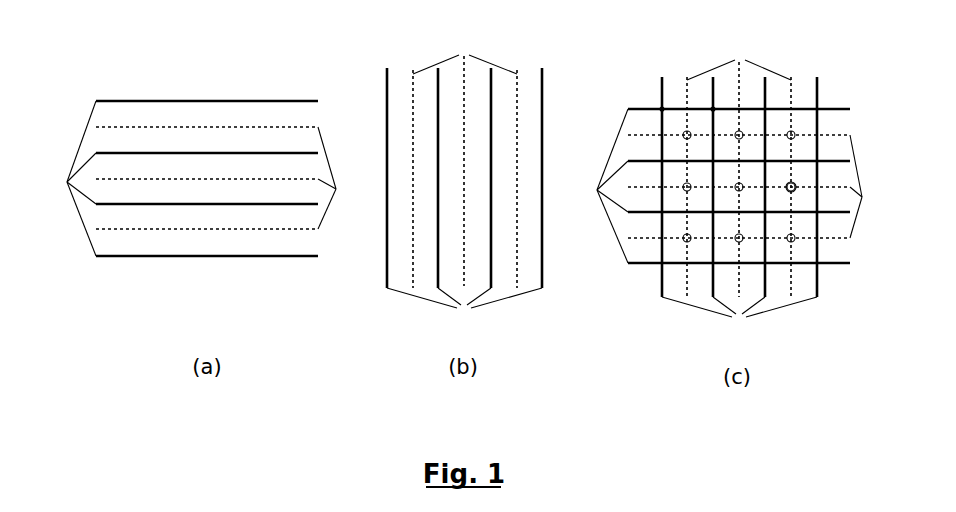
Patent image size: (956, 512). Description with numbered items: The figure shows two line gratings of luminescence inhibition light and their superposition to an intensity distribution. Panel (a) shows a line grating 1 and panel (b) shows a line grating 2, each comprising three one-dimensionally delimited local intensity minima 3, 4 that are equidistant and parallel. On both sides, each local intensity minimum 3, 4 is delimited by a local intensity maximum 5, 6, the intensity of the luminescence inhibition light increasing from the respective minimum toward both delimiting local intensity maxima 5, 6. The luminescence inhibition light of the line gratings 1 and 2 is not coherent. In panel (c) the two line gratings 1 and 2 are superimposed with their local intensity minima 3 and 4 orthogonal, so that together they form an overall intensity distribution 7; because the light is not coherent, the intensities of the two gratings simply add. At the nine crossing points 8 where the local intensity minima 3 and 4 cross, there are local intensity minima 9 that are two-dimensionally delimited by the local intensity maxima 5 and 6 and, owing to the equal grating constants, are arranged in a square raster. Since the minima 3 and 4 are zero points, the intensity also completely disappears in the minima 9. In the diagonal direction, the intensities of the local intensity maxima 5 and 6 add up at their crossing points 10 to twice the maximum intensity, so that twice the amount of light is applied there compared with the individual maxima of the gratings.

The line grating 1 is at (214, 86).
The line grating 2 is at (402, 50).
The local intensity minima 3 is at (596, 182).
The local intensity minima 4 is at (602, 59).
The local intensity maxima 5 is at (339, 182).
The local intensity maxima 6 is at (602, 310).
The intensity distribution 7 is at (809, 50).
The crossing points 8 is at (792, 187).
The local intensity minima 9 is at (792, 187).
The crossing points 10 is at (713, 109).